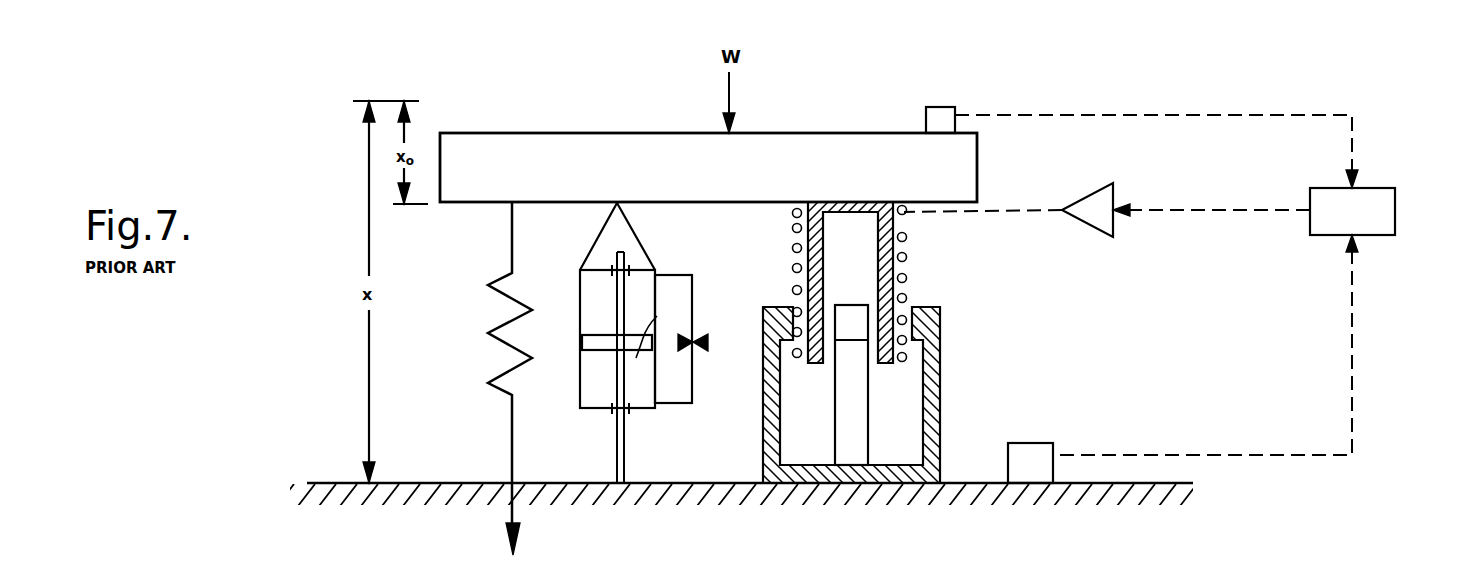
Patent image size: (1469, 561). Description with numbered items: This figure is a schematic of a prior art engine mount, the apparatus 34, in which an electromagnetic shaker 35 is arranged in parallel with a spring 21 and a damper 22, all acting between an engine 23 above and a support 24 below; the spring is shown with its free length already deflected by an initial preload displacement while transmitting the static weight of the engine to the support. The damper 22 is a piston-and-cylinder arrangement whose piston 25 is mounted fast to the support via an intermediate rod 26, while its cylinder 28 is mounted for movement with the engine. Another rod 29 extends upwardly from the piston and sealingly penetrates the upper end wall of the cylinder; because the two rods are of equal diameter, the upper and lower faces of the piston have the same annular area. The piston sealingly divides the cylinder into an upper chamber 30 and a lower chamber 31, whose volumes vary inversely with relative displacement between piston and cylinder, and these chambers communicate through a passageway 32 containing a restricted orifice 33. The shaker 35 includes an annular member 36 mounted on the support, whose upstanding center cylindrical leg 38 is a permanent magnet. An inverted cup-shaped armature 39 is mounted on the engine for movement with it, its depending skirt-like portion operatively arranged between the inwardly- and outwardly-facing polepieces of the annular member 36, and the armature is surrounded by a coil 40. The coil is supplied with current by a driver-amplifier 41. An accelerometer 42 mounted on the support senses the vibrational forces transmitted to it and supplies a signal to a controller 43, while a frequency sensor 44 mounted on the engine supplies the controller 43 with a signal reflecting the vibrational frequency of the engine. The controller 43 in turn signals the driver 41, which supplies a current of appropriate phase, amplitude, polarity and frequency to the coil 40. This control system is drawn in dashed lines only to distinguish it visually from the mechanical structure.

The spring 21 is at (482, 340).
The damper 22 is at (635, 343).
The engine 23 is at (822, 133).
The support 24 is at (712, 483).
The piston 25 is at (582, 347).
The intermediate rod 26 is at (617, 440).
The cylinder 28 is at (580, 379).
The rod 29 is at (628, 260).
The upper chamber 30 is at (600, 303).
The lower chamber 31 is at (642, 382).
The passageway 32 is at (695, 292).
The restricted orifice 33 is at (708, 342).
The apparatus 34 is at (708, 122).
The shaker 35 is at (874, 342).
The annular member 36 is at (942, 382).
The center cylindrical leg 38 is at (868, 400).
The armature 39 is at (895, 243).
The coil 40 is at (792, 228).
The driver-amplifier 41 is at (1110, 197).
The accelerometer 42 is at (1040, 443).
The controller 43 is at (1395, 210).
The frequency sensor 44 is at (942, 107).